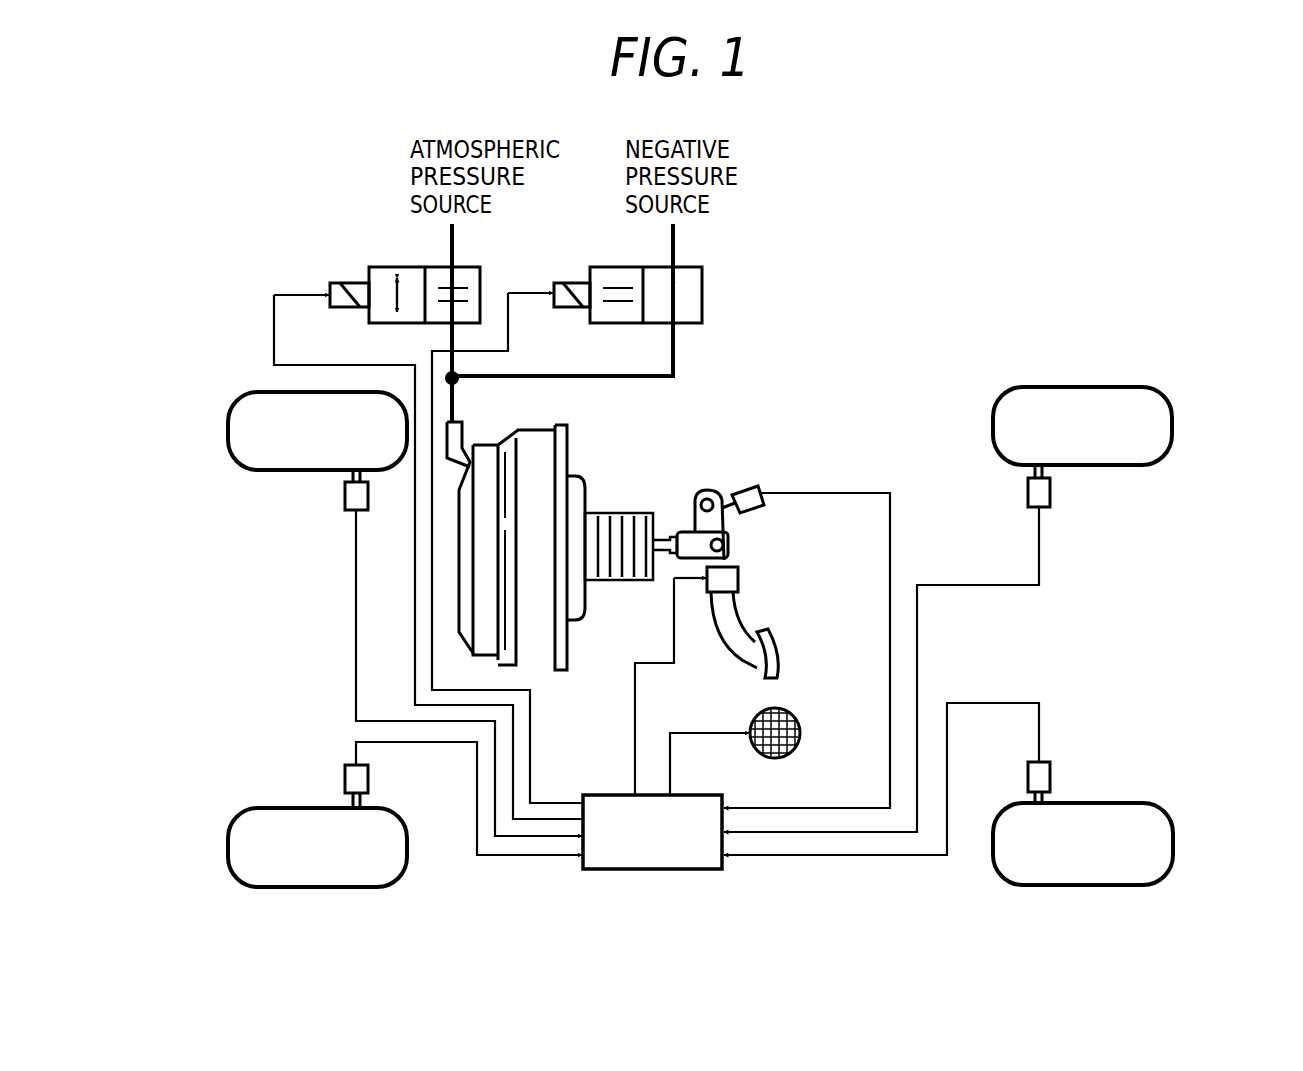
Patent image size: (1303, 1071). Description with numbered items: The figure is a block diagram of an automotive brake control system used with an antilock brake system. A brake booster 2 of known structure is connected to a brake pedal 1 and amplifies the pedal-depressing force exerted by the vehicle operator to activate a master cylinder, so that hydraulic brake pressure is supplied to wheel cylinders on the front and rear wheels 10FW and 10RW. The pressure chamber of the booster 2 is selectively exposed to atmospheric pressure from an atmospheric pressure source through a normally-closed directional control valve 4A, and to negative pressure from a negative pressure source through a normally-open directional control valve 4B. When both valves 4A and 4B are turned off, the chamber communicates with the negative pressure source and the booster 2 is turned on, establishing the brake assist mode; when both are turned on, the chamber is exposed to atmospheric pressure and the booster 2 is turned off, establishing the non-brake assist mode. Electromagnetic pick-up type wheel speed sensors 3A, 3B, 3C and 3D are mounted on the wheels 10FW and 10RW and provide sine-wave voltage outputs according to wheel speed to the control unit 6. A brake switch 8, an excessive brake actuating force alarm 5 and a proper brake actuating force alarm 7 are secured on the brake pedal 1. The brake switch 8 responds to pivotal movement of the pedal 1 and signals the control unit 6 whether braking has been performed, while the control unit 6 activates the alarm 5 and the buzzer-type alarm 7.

The brake pedal 1 is at (733, 620).
The brake booster 2 is at (563, 445).
The wheel speed sensor 3A is at (345, 494).
The wheel speed sensor 3B is at (345, 781).
The wheel speed sensor 3C is at (1050, 492).
The wheel speed sensor 3D is at (1050, 772).
The normally-closed directional control valve 4A is at (414, 266).
The normally-open directional control valve 4B is at (702, 265).
The excessive brake actuating force alarm 5 is at (738, 572).
The control unit 6 is at (705, 795).
The proper brake actuating force alarm 7 is at (782, 704).
The brake switch 8 is at (741, 490).
The front wheels 10FW is at (227, 833).
The rear wheels 10RW is at (1195, 829).